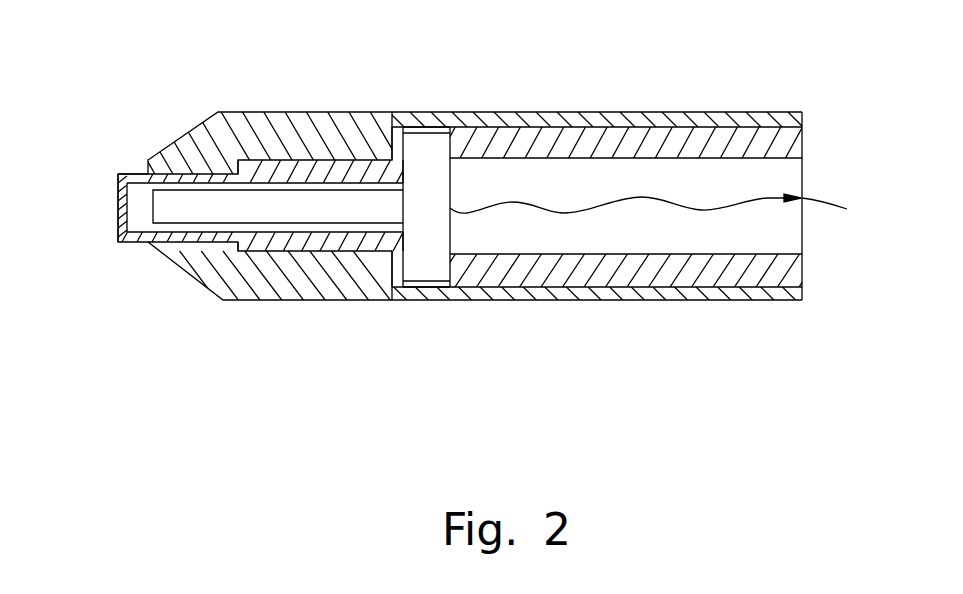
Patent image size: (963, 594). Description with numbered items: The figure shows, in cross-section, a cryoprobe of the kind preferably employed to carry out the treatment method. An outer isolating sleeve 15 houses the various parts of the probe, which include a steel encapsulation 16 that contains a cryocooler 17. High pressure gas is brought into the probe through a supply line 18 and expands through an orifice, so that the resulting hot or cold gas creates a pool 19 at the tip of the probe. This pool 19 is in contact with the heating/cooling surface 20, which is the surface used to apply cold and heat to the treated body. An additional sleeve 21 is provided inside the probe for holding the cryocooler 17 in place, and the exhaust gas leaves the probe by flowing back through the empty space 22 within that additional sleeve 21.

The isolating sleeve 15 is at (351, 112).
The steel encapsulation 16 is at (302, 238).
The cryocooler 17 is at (183, 208).
The supply line 18 is at (820, 200).
The pool 19 is at (119, 173).
The heating/cooling surface 20 is at (119, 201).
The additional sleeve 21 is at (670, 277).
The empty space 22 is at (797, 218).